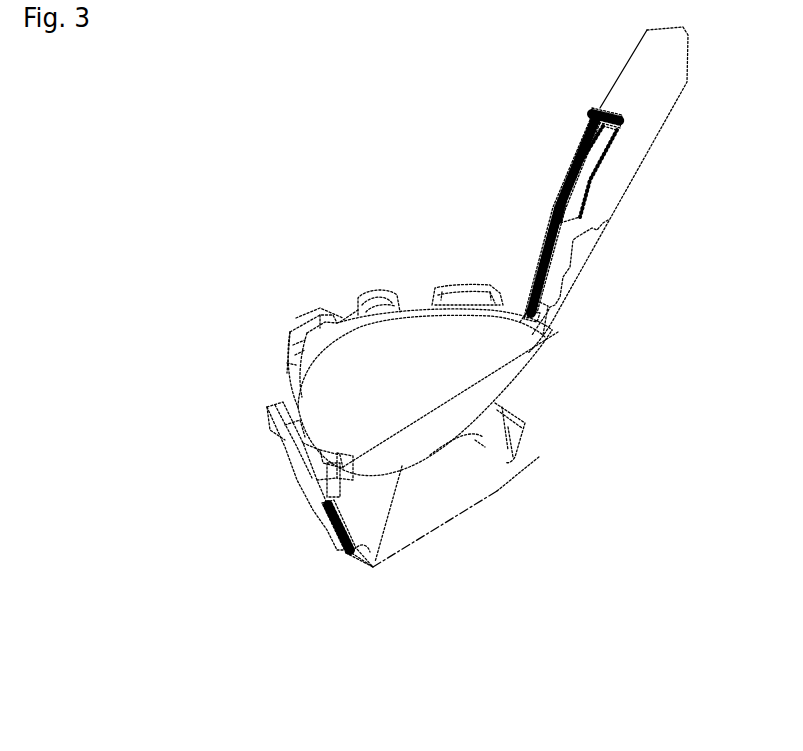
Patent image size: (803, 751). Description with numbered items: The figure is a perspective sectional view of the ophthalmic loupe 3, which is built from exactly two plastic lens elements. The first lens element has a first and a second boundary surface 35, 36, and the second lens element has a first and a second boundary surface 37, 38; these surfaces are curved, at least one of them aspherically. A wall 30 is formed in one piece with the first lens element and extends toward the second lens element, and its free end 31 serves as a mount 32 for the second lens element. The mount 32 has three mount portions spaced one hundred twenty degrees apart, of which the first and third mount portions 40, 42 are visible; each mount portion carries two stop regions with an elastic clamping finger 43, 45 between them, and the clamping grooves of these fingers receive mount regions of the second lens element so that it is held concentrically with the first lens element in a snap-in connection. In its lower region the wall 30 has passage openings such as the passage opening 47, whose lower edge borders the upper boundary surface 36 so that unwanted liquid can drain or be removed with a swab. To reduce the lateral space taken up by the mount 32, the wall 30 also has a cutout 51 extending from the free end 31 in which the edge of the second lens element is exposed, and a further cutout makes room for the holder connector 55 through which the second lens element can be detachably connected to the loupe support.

The ophthalmic loupe 3 is at (292, 316).
The wall 30 is at (317, 497).
The free end 31 is at (293, 329).
The mount 32 is at (258, 417).
The first boundary surface 35 is at (507, 485).
The second boundary surface 36 is at (386, 514).
The first boundary surface 37 is at (478, 423).
The second boundary surface 38 is at (424, 333).
The first mount portion 40 is at (353, 287).
The third mount portion 42 is at (282, 460).
The elastic clamping finger 43 is at (397, 295).
The elastic clamping finger 45 is at (322, 465).
The passage opening 47 is at (338, 544).
The cutout 51 is at (287, 363).
The holder connector 55 is at (553, 200).